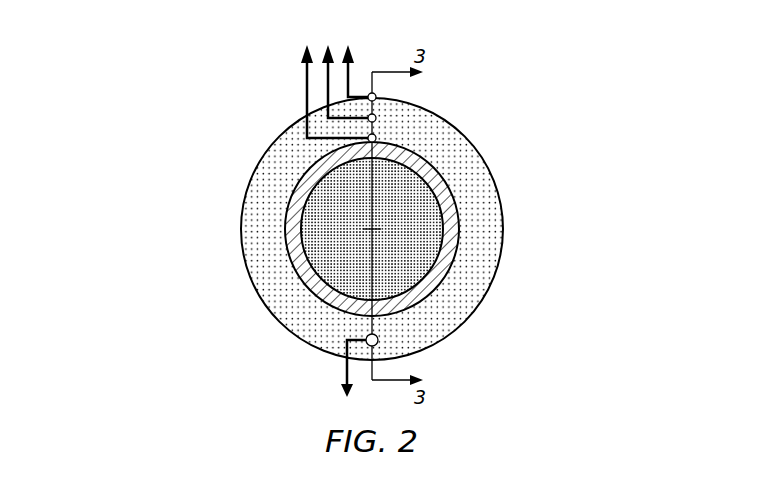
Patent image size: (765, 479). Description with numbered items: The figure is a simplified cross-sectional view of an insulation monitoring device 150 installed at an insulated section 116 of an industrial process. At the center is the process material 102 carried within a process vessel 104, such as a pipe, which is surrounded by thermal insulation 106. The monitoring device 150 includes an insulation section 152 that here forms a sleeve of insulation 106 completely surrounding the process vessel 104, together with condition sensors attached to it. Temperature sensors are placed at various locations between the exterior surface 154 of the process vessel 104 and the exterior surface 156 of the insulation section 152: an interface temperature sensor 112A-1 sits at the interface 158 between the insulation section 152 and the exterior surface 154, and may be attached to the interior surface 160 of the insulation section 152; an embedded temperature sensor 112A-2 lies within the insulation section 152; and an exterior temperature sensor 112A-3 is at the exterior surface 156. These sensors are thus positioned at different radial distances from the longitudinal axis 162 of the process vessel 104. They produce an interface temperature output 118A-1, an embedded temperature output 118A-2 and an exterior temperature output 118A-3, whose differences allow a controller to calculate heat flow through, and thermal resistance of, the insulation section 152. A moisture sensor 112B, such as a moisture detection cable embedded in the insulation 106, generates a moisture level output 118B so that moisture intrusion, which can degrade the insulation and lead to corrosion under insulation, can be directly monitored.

The process material 102 is at (426, 248).
The process vessel 104 is at (444, 181).
The thermal insulation 106 is at (262, 179).
The interface temperature sensor 112A-1 is at (377, 138).
The embedded temperature sensor 112A-2 is at (377, 118).
The exterior temperature sensor 112A-3 is at (377, 96).
The moisture sensor 112B is at (379, 340).
The insulated section 116 is at (560, 92).
The interface temperature output 118A-1 is at (307, 116).
The embedded temperature output 118A-2 is at (327, 92).
The exterior temperature output 118A-3 is at (351, 74).
The moisture level output 118B is at (342, 366).
The insulation monitoring device 150 is at (178, 95).
The insulation section 152 is at (288, 312).
The exterior surface of the process vessel 154 is at (280, 275).
The exterior surface of the insulation section 156 is at (492, 302).
The interface 158 is at (470, 222).
The interior surface of the insulation section 160 is at (300, 200).
The longitudinal axis 162 is at (371, 228).